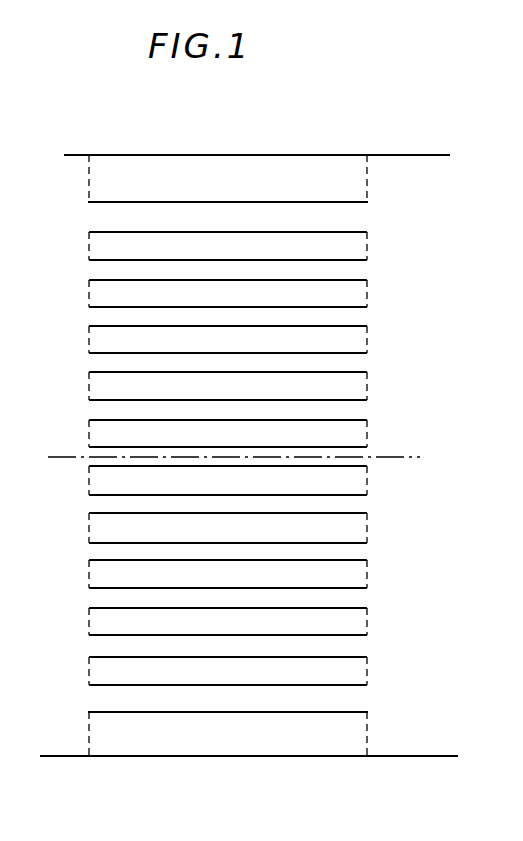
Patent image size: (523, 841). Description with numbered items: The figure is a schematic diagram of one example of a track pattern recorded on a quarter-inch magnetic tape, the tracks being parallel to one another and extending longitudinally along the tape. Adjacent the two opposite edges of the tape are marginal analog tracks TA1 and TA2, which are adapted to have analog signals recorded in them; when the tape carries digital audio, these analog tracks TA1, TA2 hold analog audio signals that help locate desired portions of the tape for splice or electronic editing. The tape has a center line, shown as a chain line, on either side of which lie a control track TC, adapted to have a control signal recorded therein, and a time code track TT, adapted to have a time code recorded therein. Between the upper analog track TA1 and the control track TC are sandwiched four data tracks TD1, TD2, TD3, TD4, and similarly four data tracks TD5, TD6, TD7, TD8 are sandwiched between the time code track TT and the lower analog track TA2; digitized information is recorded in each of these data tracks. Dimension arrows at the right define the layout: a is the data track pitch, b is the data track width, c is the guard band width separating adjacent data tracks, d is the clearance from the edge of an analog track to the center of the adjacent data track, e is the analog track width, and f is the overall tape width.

The analog track TA1 is at (228, 178).
The data track TD1 is at (228, 246).
The data track TD2 is at (228, 294).
The data track TD3 is at (228, 340).
The data track TD4 is at (228, 386).
The control track TC is at (228, 433).
The time code track TT is at (228, 480).
The data track TD5 is at (228, 528).
The data track TD6 is at (228, 574).
The data track TD7 is at (228, 622).
The data track TD8 is at (228, 671).
The analog track TA2 is at (228, 734).
The data track pitch a is at (391, 248).
The data track width b is at (372, 327).
The guard band width c is at (372, 373).
The clearance between adjacent analog and data tracks d is at (391, 204).
The analog track width e is at (391, 157).
The tape width f is at (437, 157).